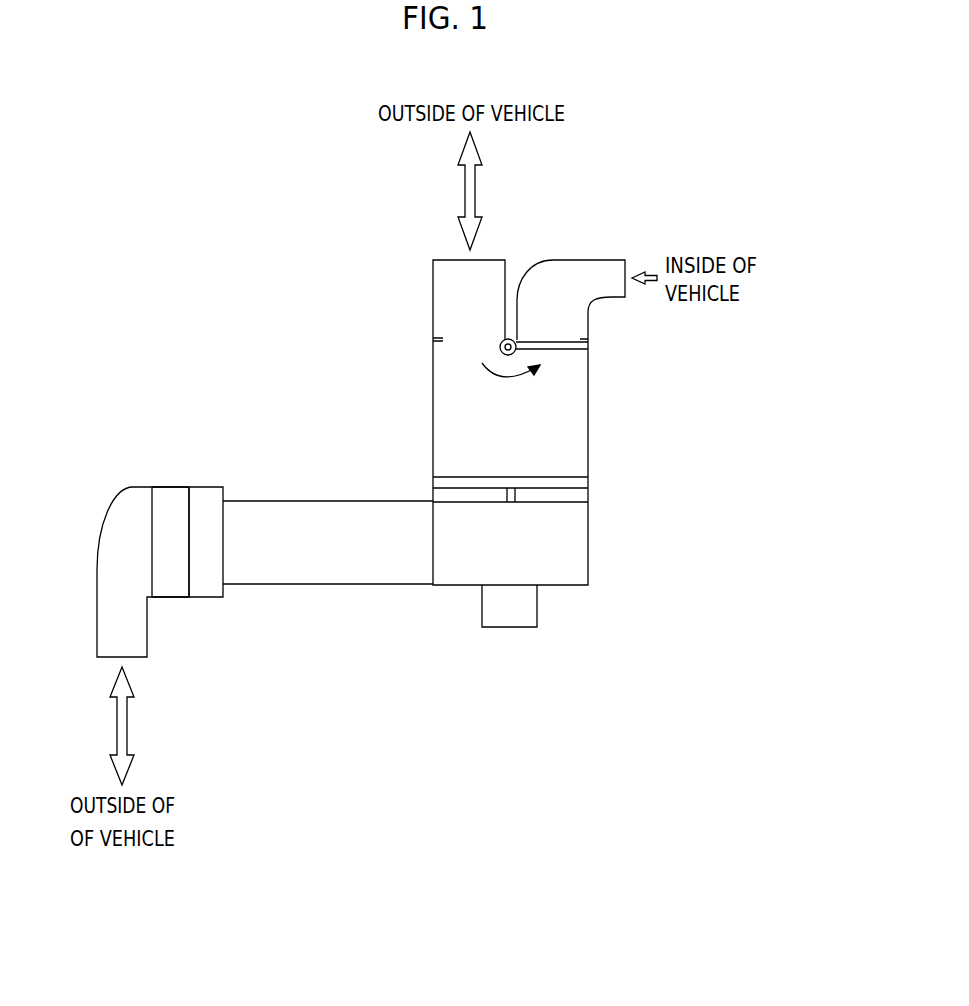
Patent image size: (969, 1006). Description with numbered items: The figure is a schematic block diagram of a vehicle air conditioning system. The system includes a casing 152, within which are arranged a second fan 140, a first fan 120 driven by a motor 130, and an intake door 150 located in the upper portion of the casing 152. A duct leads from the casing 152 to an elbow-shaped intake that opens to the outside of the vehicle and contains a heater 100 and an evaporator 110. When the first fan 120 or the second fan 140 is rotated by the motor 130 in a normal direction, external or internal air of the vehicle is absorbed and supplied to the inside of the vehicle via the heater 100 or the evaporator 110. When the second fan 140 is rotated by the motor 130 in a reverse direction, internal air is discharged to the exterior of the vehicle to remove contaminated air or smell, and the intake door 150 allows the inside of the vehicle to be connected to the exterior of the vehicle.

The heater 100 is at (170, 500).
The evaporator 110 is at (205, 588).
The first fan 120 is at (580, 548).
The motor 130 is at (537, 607).
The second fan 140 is at (588, 484).
The intake door 150 is at (505, 342).
The casing 152 is at (588, 407).